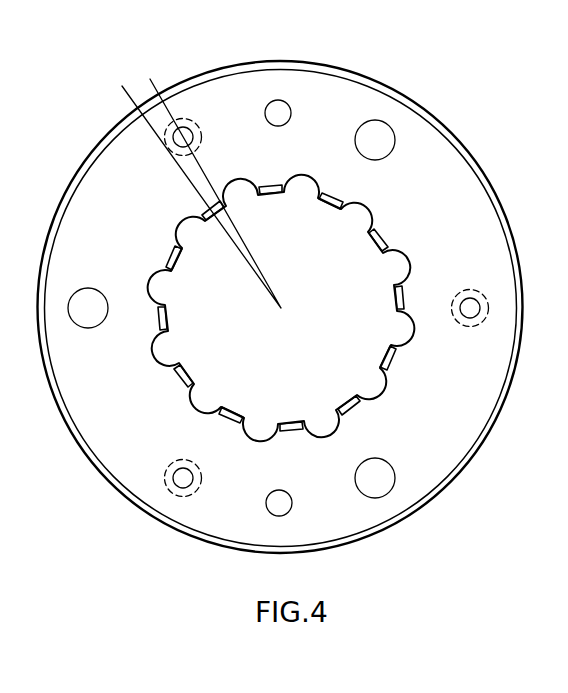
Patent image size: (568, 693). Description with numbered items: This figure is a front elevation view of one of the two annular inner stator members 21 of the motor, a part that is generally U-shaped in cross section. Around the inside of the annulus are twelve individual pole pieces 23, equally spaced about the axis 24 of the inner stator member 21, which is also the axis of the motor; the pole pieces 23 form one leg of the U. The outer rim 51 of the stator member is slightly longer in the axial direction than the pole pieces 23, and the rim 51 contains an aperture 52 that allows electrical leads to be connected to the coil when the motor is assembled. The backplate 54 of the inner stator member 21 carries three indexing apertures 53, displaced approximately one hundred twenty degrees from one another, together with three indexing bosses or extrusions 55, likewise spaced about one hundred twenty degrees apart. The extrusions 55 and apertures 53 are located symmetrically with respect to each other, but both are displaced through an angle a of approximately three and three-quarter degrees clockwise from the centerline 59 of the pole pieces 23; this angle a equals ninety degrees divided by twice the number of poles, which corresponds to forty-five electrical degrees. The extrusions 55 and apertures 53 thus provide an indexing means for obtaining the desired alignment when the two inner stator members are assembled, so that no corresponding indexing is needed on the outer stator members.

The inner stator member 21 is at (302, 304).
The pole pieces 23 is at (212, 222).
The axis 24 is at (283, 308).
The outer rim 51 is at (477, 447).
The aperture 52 is at (288, 548).
The indexing apertures 53 is at (393, 130).
The backplate 54 is at (103, 198).
The indexing bosses or extrusions 55 is at (183, 118).
The centerline 59 is at (153, 137).
The angle a is at (206, 160).